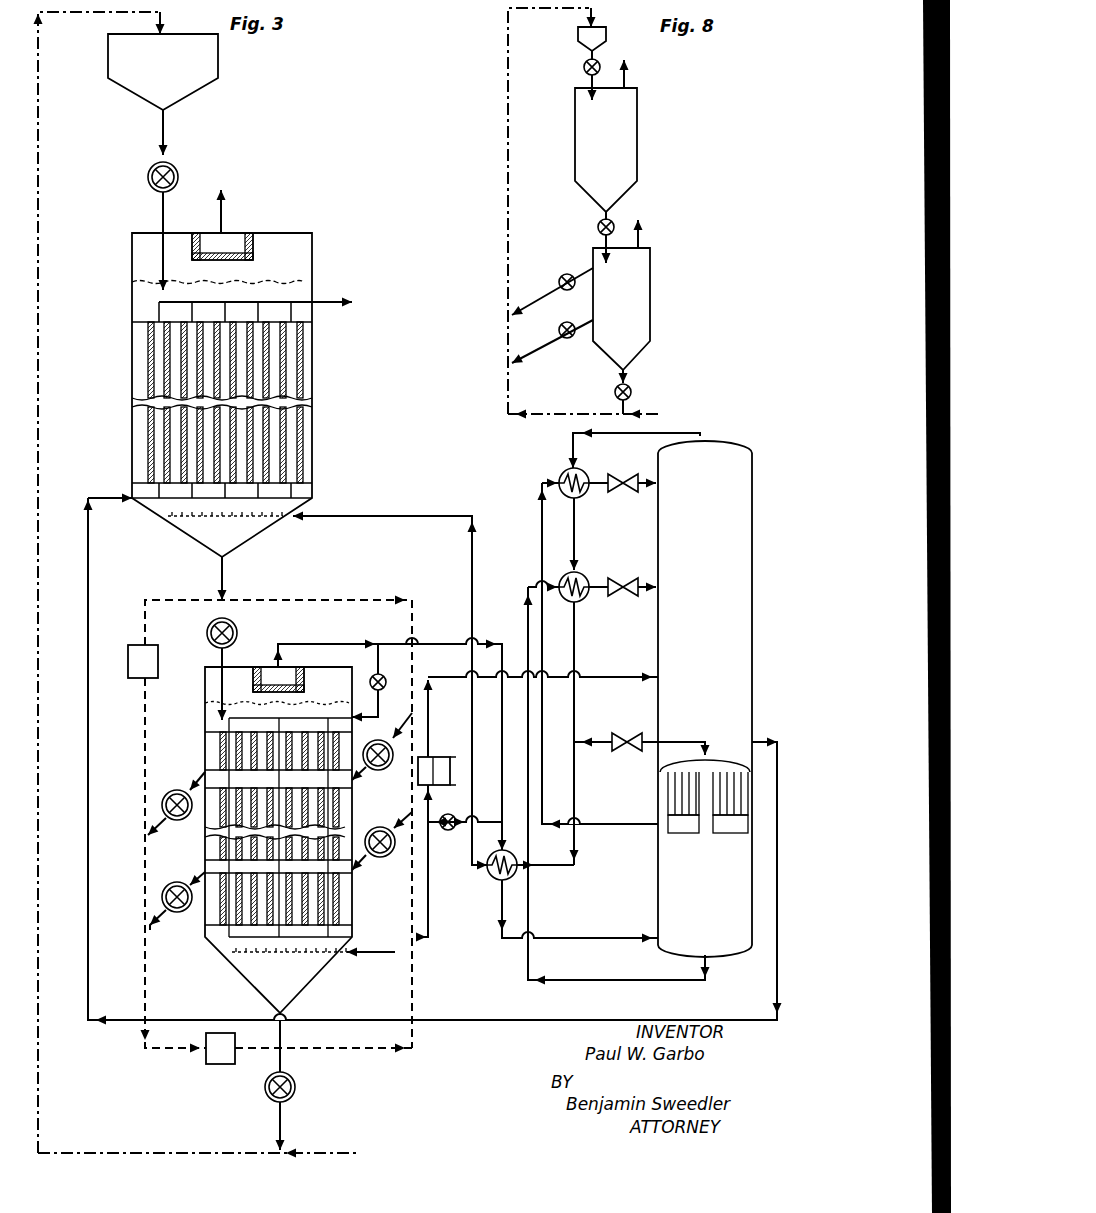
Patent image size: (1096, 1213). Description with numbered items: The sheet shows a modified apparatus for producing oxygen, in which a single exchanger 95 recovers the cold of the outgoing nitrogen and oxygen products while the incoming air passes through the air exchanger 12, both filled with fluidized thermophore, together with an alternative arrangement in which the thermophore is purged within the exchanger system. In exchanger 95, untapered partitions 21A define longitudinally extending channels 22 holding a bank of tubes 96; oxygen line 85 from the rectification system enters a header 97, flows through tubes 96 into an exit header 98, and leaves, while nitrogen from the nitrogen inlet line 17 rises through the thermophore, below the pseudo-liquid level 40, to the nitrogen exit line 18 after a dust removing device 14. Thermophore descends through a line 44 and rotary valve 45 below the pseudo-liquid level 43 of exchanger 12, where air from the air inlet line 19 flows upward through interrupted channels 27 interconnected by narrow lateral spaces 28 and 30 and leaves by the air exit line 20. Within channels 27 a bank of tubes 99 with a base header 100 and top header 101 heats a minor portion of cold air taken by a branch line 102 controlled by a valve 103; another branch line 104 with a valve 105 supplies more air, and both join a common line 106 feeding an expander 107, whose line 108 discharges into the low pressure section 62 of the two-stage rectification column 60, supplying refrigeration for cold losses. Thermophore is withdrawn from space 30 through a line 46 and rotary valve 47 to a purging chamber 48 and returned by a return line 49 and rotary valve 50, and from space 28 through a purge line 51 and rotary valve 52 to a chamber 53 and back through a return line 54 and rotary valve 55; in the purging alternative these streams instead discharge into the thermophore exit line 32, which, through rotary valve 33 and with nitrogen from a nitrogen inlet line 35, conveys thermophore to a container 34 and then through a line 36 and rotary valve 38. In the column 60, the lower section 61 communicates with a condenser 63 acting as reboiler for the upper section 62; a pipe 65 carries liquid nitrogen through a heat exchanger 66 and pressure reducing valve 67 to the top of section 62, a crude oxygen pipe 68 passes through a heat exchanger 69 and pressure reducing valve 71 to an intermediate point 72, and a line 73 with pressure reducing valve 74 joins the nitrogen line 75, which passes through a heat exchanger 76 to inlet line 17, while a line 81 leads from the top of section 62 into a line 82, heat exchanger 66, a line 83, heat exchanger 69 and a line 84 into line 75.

In FIG. 3, the air exchanger 12 is at (260, 840).
In FIG. 8, the air exchanger 12 is at (636, 309).
In FIG. 3, the dust removing device 14 is at (253, 235).
In FIG. 3, the nitrogen inlet line 17 is at (378, 516).
In FIG. 3, the nitrogen exit line 18 is at (226, 212).
In FIG. 8, the nitrogen exit line 18 is at (627, 75).
In FIG. 3, the air inlet line 19 is at (388, 958).
In FIG. 3, the air exit line 20 is at (326, 650).
In FIG. 8, the air exit line 20 is at (640, 238).
In FIG. 3, the partitions 21A is at (300, 382).
In FIG. 3, the longitudinally extending channels 22 is at (306, 350).
In FIG. 3, the longitudinally extending interrupted channels 27 is at (205, 743).
In FIG. 3, the narrow lateral space 28 is at (205, 866).
In FIG. 3, the narrow lateral space 30 is at (205, 772).
In FIG. 3, the thermophore exit line 32 is at (45, 432).
In FIG. 8, the thermophore exit line 32 is at (510, 196).
In FIG. 3, the rotary valve 33 is at (297, 1087).
In FIG. 8, the rotary valve 33 is at (631, 392).
In FIG. 3, the container 34 is at (108, 63).
In FIG. 8, the container 34 is at (578, 33).
In FIG. 3, the nitrogen inlet line 35 is at (306, 1153).
In FIG. 8, the nitrogen inlet line 35 is at (648, 412).
In FIG. 3, the thermophore feed line 36 is at (158, 127).
In FIG. 8, the thermophore feed line 36 is at (590, 55).
In FIG. 3, the rotary valve 38 is at (148, 176).
In FIG. 8, the rotary valve 38 is at (584, 70).
In FIG. 3, the pseudo-liquid level 40 is at (296, 278).
In FIG. 3, the pseudo-liquid level 43 is at (210, 700).
In FIG. 3, the thermophore transfer line 44 is at (225, 575).
In FIG. 8, the thermophore transfer line 44 is at (608, 211).
In FIG. 3, the rotary valve 45 is at (237, 623).
In FIG. 8, the rotary valve 45 is at (598, 228).
In FIG. 3, the thermophore withdrawal line 46 is at (150, 834).
In FIG. 8, the thermophore withdrawal line 46 is at (536, 290).
In FIG. 3, the rotary valve 47 is at (162, 802).
In FIG. 8, the rotary valve 47 is at (570, 276).
In FIG. 3, the purging chamber 48 is at (143, 661).
In FIG. 3, the return line 49 is at (145, 627).
In FIG. 3, the rotary valve 50 is at (384, 772).
In FIG. 3, the purge line 51 is at (190, 912).
In FIG. 8, the purge line 51 is at (538, 352).
In FIG. 3, the rotary valve 52 is at (162, 898).
In FIG. 8, the rotary valve 52 is at (570, 324).
In FIG. 3, the purging chamber 53 is at (220, 1048).
In FIG. 3, the return line 54 is at (400, 820).
In FIG. 3, the rotary valve 55 is at (380, 860).
In FIG. 3, the two-stage rectification column 60 is at (718, 699).
In FIG. 3, the lower section 61 is at (705, 880).
In FIG. 3, the upper section 62 is at (697, 612).
In FIG. 3, the condenser 63 is at (734, 750).
In FIG. 3, the pipe 65 is at (632, 822).
In FIG. 3, the heat exchanger 66 is at (560, 470).
In FIG. 3, the pressure reducing valve 67 is at (627, 458).
In FIG. 3, the crude oxygen pipe 68 is at (644, 970).
In FIG. 3, the heat exchanger 69 is at (570, 572).
In FIG. 3, the pressure reducing valve 71 is at (622, 575).
In FIG. 3, the intermediate point 72 is at (656, 587).
In FIG. 3, the line 73 is at (680, 742).
In FIG. 3, the pressure reducing valve 74 is at (632, 722).
In FIG. 3, the nitrogen line 75 is at (574, 793).
In FIG. 3, the heat exchanger 76 is at (498, 881).
In FIG. 3, the line 81 is at (705, 437).
In FIG. 3, the line 82 is at (573, 445).
In FIG. 3, the line 83 is at (576, 527).
In FIG. 3, the line 84 is at (576, 645).
In FIG. 3, the oxygen line 85 is at (88, 550).
In FIG. 3, the exchanger 95 is at (203, 395).
In FIG. 8, the exchanger 95 is at (619, 150).
In FIG. 3, the bank of tubes 96 is at (300, 297).
In FIG. 3, the header 97 is at (146, 494).
In FIG. 3, the exit header 98 is at (330, 297).
In FIG. 3, the bank of tubes 99 is at (232, 930).
In FIG. 3, the base header 100 is at (336, 935).
In FIG. 3, the top header 101 is at (318, 720).
In FIG. 3, the branch line 102 is at (391, 667).
In FIG. 3, the valve 103 is at (386, 708).
In FIG. 3, the branch line 104 is at (478, 818).
In FIG. 3, the valve 105 is at (446, 832).
In FIG. 3, the common line 106 is at (432, 897).
In FIG. 3, the expander 107 is at (436, 757).
In FIG. 3, the line 108 is at (430, 708).